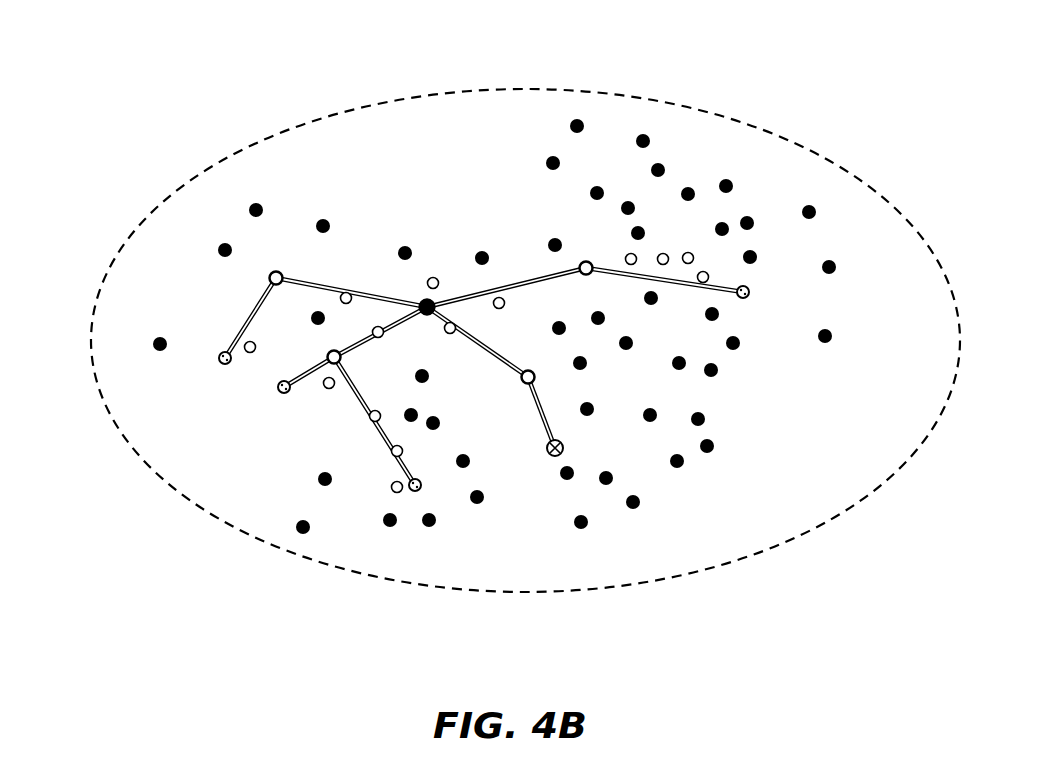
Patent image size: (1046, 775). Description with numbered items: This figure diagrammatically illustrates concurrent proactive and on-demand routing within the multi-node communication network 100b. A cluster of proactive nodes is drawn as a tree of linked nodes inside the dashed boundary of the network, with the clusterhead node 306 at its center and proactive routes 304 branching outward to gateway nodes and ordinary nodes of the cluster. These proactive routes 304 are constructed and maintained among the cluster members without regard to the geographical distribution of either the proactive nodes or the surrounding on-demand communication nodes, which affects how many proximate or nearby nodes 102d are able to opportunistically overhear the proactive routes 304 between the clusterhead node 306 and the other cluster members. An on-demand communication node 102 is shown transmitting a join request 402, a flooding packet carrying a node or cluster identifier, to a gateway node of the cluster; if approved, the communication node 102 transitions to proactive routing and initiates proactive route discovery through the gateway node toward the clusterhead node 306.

The multi-node communication network 100b is at (140, 76).
The clusterhead node 306 is at (421, 297).
The proactive routes 304 is at (359, 399).
The nearby nodes 102d is at (368, 424).
The join request 402 is at (536, 386).
The communication node 102 is at (557, 458).